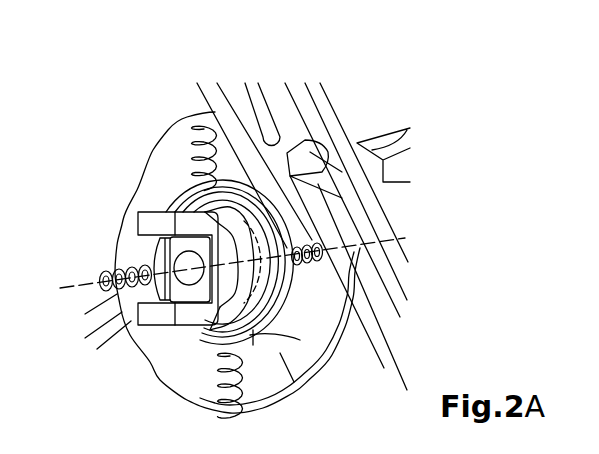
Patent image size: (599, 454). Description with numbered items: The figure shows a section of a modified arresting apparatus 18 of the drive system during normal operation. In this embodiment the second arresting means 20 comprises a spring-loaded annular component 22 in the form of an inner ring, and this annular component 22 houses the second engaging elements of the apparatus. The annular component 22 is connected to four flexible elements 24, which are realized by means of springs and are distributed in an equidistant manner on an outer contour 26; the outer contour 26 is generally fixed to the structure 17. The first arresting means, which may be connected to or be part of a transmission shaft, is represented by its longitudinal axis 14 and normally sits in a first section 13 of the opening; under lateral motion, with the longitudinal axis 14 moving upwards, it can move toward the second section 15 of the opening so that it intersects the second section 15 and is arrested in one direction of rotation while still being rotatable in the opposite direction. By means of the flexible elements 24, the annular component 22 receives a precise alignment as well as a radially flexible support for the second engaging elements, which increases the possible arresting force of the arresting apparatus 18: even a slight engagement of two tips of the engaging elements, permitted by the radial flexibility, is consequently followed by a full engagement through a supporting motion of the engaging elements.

The first section 13 is at (300, 340).
The longitudinal axis 14 is at (97, 288).
The second section 15 is at (255, 198).
The structure 17 is at (382, 370).
The arresting apparatus 18 is at (281, 80).
The second arresting means 20 is at (280, 353).
The annular component 22 is at (253, 330).
The flexible elements 24 is at (191, 148).
The outer contour 26 is at (128, 162).